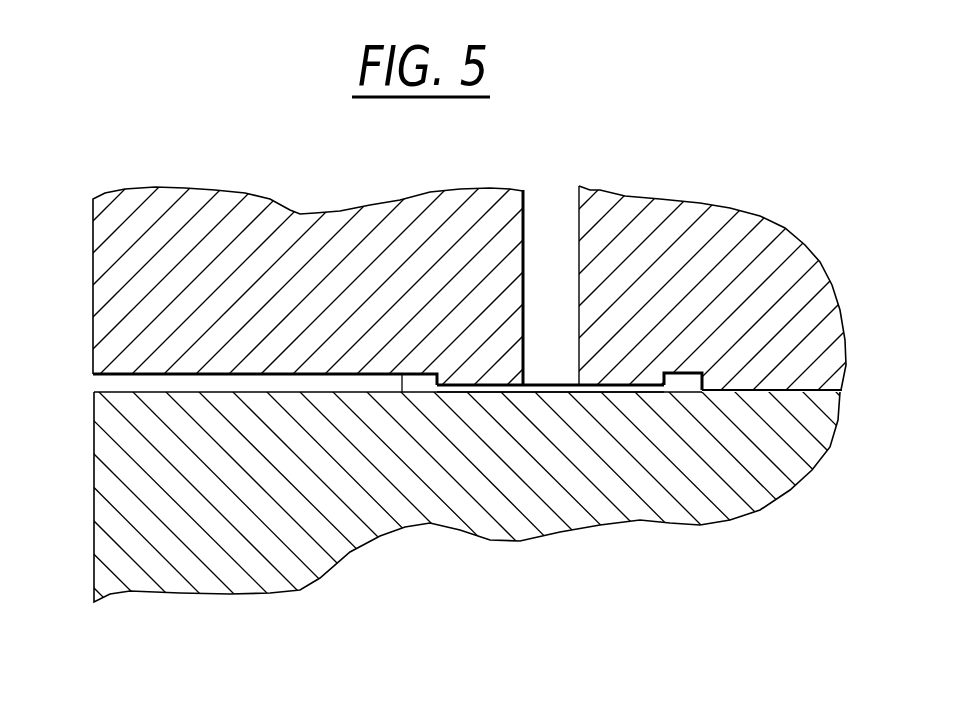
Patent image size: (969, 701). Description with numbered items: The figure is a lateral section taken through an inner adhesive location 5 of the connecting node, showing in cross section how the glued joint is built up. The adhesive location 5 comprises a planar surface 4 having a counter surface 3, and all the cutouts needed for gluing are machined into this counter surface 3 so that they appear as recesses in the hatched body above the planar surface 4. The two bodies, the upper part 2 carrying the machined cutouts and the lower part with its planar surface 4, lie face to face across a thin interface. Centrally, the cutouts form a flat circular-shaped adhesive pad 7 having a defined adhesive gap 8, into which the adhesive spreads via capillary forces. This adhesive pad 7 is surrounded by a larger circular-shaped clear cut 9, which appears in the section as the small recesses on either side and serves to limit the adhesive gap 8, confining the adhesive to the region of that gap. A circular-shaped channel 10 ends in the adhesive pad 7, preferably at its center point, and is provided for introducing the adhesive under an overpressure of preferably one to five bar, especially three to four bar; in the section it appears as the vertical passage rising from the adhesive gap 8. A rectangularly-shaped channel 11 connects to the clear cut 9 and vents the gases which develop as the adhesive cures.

The upper body 2 is at (300, 213).
The counter surface 3 is at (782, 389).
The planar surface 4 is at (292, 393).
The adhesive location 5 is at (685, 178).
The adhesive pad 7 is at (622, 373).
The adhesive gap 8 is at (498, 387).
The clear cut 9 is at (420, 378).
The channel 10 is at (561, 242).
The channel 11 is at (95, 383).